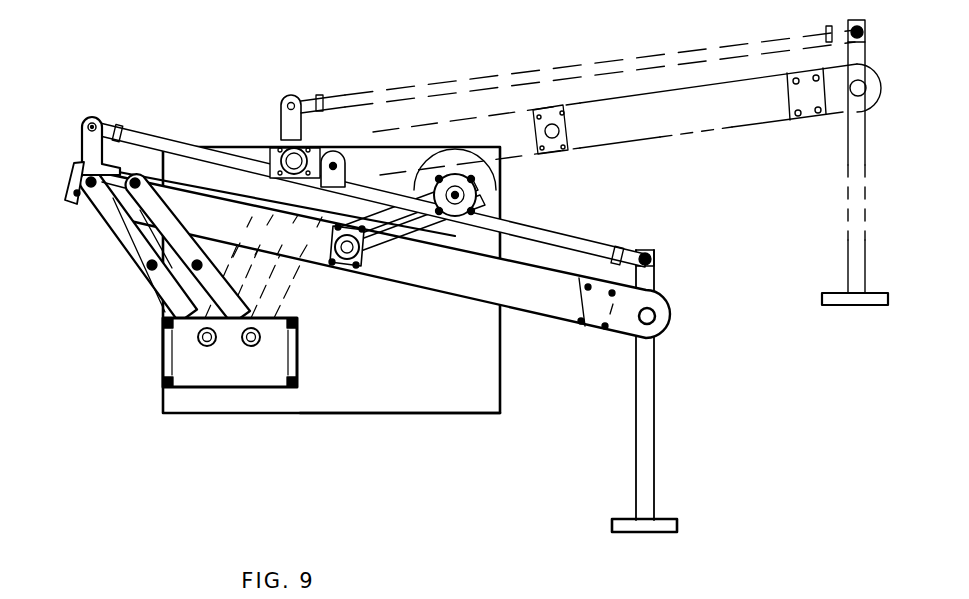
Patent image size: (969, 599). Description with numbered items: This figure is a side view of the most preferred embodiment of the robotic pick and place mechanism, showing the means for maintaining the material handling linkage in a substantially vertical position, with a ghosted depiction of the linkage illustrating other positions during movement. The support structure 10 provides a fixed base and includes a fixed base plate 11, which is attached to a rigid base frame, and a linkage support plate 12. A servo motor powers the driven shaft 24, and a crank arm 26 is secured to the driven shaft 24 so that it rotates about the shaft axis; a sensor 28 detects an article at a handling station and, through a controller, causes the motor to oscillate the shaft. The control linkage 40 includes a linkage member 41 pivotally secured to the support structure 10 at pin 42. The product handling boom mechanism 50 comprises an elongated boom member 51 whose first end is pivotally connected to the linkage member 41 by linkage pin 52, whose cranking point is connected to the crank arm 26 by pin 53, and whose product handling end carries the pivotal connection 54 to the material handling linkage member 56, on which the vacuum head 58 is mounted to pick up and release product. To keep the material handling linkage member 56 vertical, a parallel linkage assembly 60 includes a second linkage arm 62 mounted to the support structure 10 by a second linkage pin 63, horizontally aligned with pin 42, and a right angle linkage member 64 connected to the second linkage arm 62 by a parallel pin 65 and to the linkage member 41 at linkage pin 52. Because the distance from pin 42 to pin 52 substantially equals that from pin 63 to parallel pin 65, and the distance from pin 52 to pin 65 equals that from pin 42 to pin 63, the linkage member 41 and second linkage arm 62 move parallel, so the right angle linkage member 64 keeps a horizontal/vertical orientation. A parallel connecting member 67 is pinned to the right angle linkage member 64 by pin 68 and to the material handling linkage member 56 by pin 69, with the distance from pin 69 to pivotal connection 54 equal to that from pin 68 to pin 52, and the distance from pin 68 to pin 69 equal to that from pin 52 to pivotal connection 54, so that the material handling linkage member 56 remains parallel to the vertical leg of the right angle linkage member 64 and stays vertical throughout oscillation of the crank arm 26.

The support structure 10 is at (440, 418).
The fixed base plate 11 is at (342, 416).
The linkage support plate 12 is at (207, 375).
The driven shaft 24 is at (497, 197).
The crank arm 26 is at (412, 226).
The sensor 28 is at (850, 336).
The control linkage 40 is at (157, 283).
The linkage member 41 is at (128, 237).
The pin 42 is at (198, 339).
The product handling boom mechanism 50 is at (478, 283).
The elongated boom member 51 is at (548, 308).
The linkage pin 52 is at (97, 193).
The pin (crank connection) 53 is at (368, 188).
The pivotal connection 54 is at (657, 318).
The material handling linkage member 56 is at (645, 492).
The vacuum head 58 is at (633, 522).
The parallel linkage assembly 60 is at (254, 147).
The second linkage arm 62 is at (180, 212).
The second linkage pin 63 is at (251, 347).
The right angle linkage member 64 is at (84, 134).
The parallel pin 65 is at (150, 172).
The parallel connecting member 67 is at (145, 130).
The pin 68 is at (86, 117).
The pin 69 is at (652, 259).